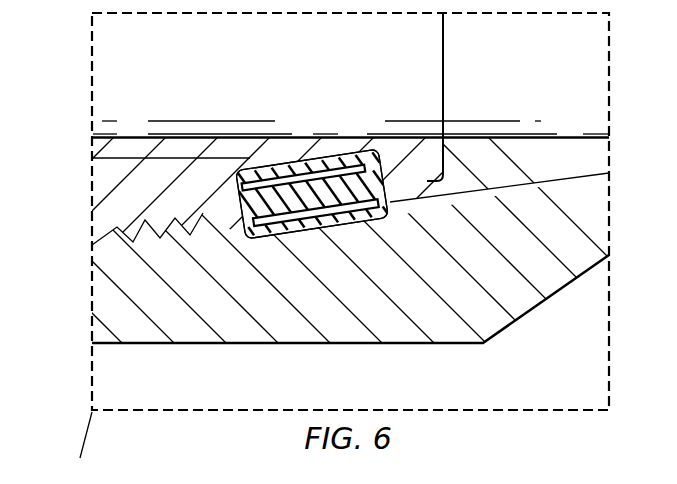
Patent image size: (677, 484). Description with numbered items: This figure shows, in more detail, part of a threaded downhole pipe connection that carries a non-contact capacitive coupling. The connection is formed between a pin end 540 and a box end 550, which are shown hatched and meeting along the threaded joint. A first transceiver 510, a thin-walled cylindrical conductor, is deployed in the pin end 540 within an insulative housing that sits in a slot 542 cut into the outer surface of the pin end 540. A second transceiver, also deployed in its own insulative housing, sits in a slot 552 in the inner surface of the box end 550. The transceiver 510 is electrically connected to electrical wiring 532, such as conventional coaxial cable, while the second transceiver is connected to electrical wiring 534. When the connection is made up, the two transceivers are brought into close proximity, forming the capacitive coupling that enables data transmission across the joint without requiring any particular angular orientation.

The first transceiver 510 is at (315, 166).
The electrical wiring 532 is at (140, 158).
The electrical wiring 534 is at (557, 180).
The pin end 540 is at (221, 73).
The slot 542 is at (237, 183).
The box end 550 is at (410, 343).
The slot 552 is at (247, 236).